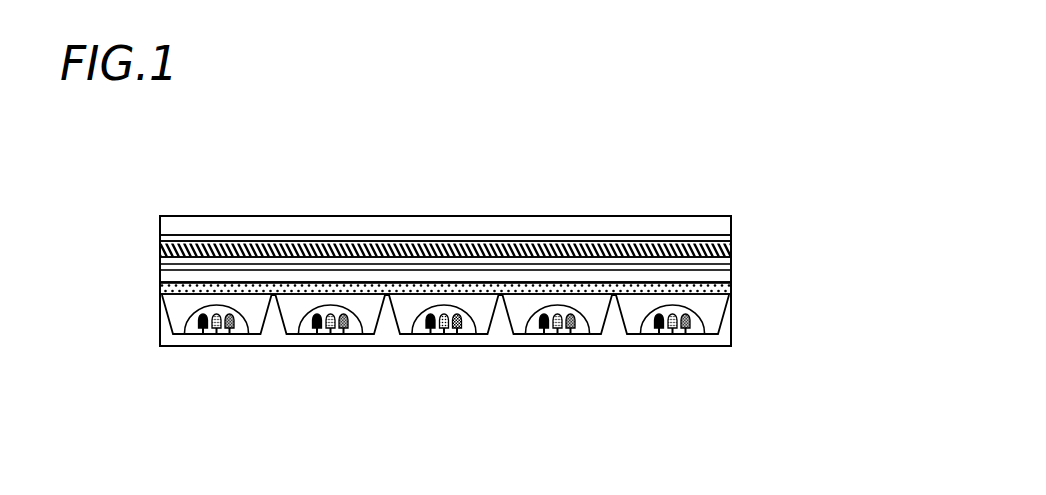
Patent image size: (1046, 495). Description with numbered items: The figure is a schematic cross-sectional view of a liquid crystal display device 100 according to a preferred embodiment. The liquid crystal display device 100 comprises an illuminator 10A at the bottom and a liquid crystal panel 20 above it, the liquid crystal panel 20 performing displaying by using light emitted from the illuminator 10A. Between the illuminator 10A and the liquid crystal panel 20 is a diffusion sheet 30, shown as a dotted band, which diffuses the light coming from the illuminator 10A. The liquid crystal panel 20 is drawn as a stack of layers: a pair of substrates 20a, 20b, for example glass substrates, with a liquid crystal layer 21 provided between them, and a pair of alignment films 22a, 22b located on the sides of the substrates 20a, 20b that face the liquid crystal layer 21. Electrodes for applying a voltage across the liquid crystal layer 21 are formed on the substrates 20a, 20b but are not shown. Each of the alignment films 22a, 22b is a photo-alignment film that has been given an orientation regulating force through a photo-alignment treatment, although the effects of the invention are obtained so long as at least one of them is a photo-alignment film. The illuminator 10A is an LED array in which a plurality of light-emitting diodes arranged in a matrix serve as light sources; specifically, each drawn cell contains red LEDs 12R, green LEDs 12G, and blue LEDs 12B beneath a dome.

The liquid crystal display device 100 is at (699, 176).
The liquid crystal panel 20 is at (158, 217).
The substrate 20b is at (723, 232).
The alignment film 22b is at (732, 239).
The liquid crystal layer 21 is at (732, 249).
The alignment film 22a is at (732, 261).
The substrate 20a is at (732, 277).
The diffusion sheet 30 is at (158, 290).
The illuminator 10A is at (158, 295).
The blue LEDs 12B is at (200, 333).
The green LEDs 12G is at (214, 333).
The red LEDs 12R is at (228, 333).